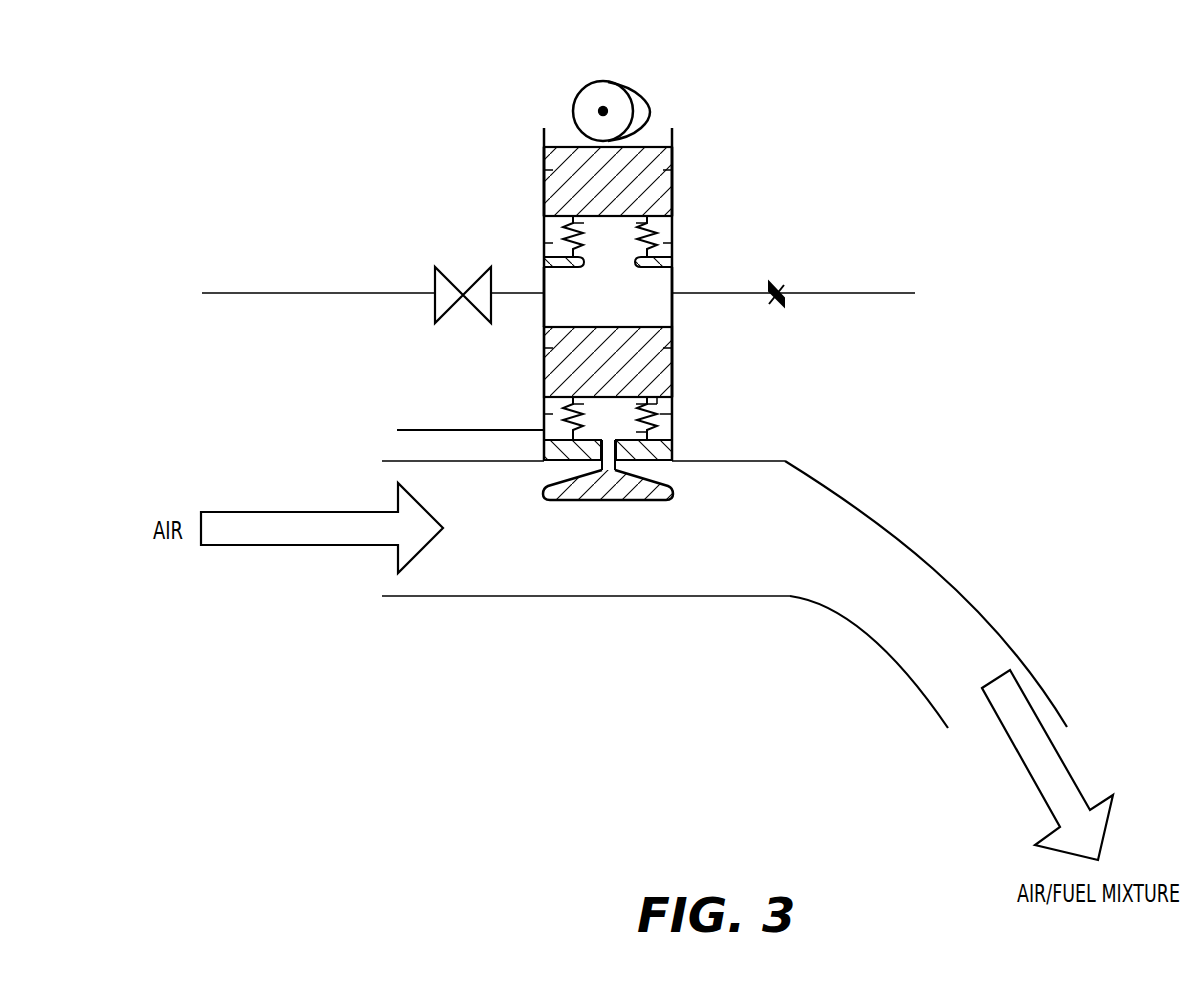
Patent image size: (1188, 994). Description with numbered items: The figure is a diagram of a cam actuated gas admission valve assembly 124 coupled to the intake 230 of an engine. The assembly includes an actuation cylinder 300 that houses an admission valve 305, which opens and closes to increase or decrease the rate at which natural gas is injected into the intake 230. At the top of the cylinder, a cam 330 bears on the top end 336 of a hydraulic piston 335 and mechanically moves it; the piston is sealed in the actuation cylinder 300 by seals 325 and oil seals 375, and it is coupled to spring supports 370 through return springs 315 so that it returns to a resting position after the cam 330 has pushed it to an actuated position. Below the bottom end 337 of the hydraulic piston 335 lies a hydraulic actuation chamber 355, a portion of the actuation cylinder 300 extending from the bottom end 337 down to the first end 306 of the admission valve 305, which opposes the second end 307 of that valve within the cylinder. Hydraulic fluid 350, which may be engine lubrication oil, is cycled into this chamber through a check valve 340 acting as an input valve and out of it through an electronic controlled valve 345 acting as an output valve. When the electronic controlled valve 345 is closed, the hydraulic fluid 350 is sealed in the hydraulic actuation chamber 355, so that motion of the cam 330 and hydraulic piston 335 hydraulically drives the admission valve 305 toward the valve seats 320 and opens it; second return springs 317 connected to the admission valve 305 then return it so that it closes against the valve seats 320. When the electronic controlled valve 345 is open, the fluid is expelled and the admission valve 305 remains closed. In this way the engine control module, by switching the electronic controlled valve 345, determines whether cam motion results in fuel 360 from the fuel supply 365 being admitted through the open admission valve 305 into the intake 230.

The gas admission valve assembly 124 is at (216, 66).
The intake 230 is at (929, 556).
The actuation cylinder 300 is at (544, 210).
The admission valve 305 is at (543, 374).
The first end 306 is at (555, 327).
The second end 307 is at (665, 398).
The return spring 315 is at (653, 232).
The second return spring 317 is at (659, 423).
The valve seat 320 is at (543, 451).
The seal 325 is at (673, 348).
The cam 330 is at (571, 112).
The hydraulic piston 335 is at (543, 183).
The top end 336 is at (560, 147).
The bottom end 337 is at (662, 220).
The check valve 340 is at (786, 302).
The electronic controlled valve 345 is at (434, 282).
The hydraulic fluid 350 is at (643, 307).
The hydraulic actuation chamber 355 is at (608, 297).
The fuel 360 is at (623, 431).
The fuel supply 365 is at (417, 427).
The spring support 370 is at (675, 261).
The oil seal 375 is at (673, 168).